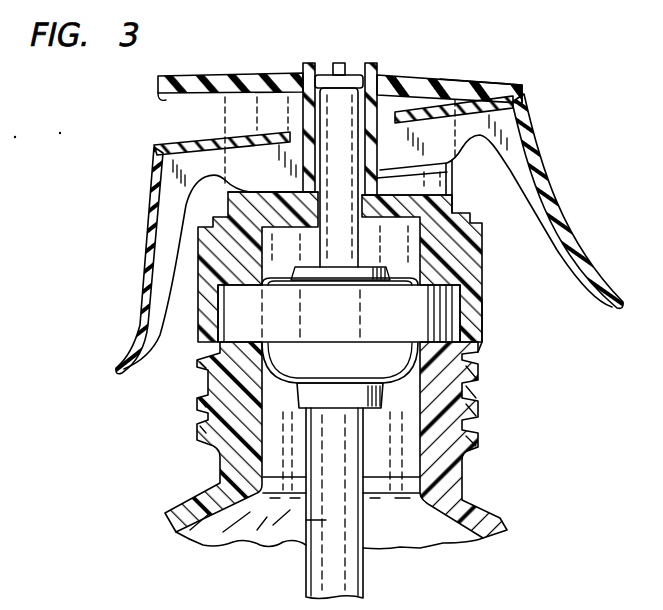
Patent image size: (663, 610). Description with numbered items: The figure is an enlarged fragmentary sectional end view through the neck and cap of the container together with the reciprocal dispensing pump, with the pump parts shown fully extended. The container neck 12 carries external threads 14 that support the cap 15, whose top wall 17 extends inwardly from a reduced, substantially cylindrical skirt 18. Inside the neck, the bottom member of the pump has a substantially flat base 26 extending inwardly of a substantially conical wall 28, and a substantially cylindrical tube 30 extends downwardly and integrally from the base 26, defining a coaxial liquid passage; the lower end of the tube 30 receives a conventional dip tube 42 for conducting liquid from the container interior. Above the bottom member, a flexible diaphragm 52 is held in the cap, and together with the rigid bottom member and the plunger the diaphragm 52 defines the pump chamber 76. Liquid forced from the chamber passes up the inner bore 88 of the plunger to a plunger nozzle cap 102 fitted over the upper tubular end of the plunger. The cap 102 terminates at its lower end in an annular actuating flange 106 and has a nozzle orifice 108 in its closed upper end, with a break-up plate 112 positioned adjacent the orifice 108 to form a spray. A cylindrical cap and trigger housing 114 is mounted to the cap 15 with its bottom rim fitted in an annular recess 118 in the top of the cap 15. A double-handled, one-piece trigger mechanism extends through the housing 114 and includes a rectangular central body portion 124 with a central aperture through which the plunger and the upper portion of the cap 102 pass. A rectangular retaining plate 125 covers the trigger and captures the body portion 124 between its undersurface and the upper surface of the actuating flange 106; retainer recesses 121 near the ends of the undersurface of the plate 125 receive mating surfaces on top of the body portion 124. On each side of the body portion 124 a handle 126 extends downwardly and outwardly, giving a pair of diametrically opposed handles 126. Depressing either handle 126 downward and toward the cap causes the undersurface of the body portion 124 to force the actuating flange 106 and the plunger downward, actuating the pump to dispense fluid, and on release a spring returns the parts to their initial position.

The neck 12 is at (440, 373).
The threads 14 is at (463, 419).
The cap 15 is at (488, 380).
The top wall 17 is at (388, 238).
The cylindrical skirt 18 is at (458, 262).
The flat base 26 is at (369, 410).
The conical wall 28 is at (377, 402).
The cylindrical tube 30 is at (350, 480).
The dip tube 42 is at (363, 572).
The diaphragm 52 is at (272, 262).
The pump chamber 76 is at (296, 366).
The inner bore 88 is at (338, 118).
The plunger nozzle cap 102 is at (425, 70).
The annular actuating flange 106 is at (440, 197).
The nozzle orifice 108 is at (340, 75).
The break-up plate 112 is at (318, 66).
The cylindrical cap and trigger housing 114 is at (250, 115).
The annular recess 118 is at (476, 226).
The retainer recesses 121 is at (167, 97).
The central body portion 124 is at (423, 103).
The retaining plate 125 is at (493, 80).
The handle 126 is at (544, 163).